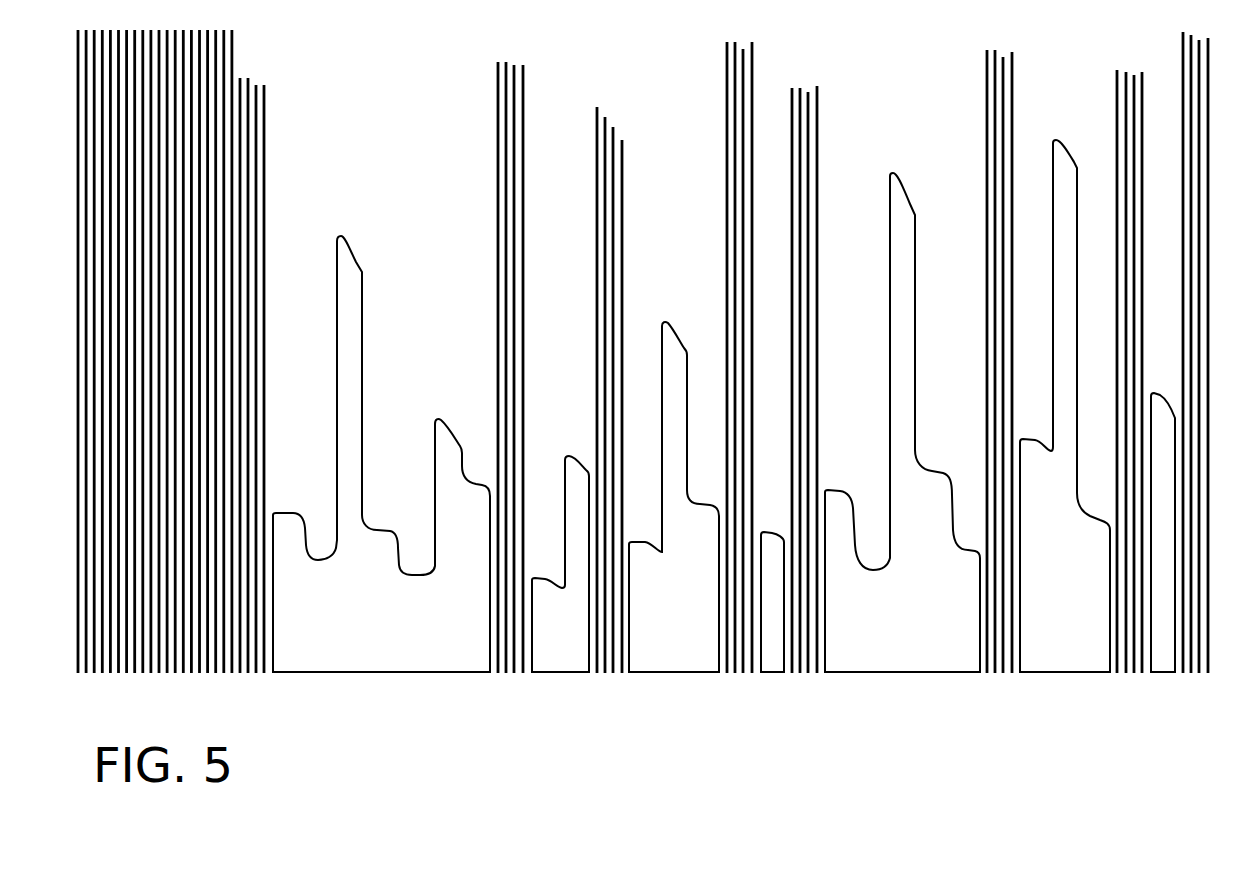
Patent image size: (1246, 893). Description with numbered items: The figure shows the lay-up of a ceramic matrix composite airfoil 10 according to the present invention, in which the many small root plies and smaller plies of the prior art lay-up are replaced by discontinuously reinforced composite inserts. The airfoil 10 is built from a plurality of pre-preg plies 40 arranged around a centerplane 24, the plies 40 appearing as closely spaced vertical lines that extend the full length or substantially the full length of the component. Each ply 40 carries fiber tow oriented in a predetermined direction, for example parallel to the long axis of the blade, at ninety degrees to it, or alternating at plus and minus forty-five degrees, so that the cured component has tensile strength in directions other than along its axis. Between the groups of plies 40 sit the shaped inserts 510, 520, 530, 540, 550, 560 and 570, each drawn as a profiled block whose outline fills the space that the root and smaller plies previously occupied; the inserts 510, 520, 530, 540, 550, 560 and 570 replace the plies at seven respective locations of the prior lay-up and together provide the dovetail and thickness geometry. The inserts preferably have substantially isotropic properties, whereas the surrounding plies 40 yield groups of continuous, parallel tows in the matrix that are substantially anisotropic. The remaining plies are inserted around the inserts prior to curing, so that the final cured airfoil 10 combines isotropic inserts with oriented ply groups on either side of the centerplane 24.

The airfoil 10 is at (580, 734).
The centerplane 24 is at (1208, 675).
The pre-preg plies 40 is at (166, 673).
The insert 510 is at (380, 675).
The insert 520 is at (560, 675).
The insert 530 is at (675, 675).
The insert 540 is at (772, 675).
The insert 550 is at (903, 675).
The insert 560 is at (1067, 675).
The insert 570 is at (1162, 675).